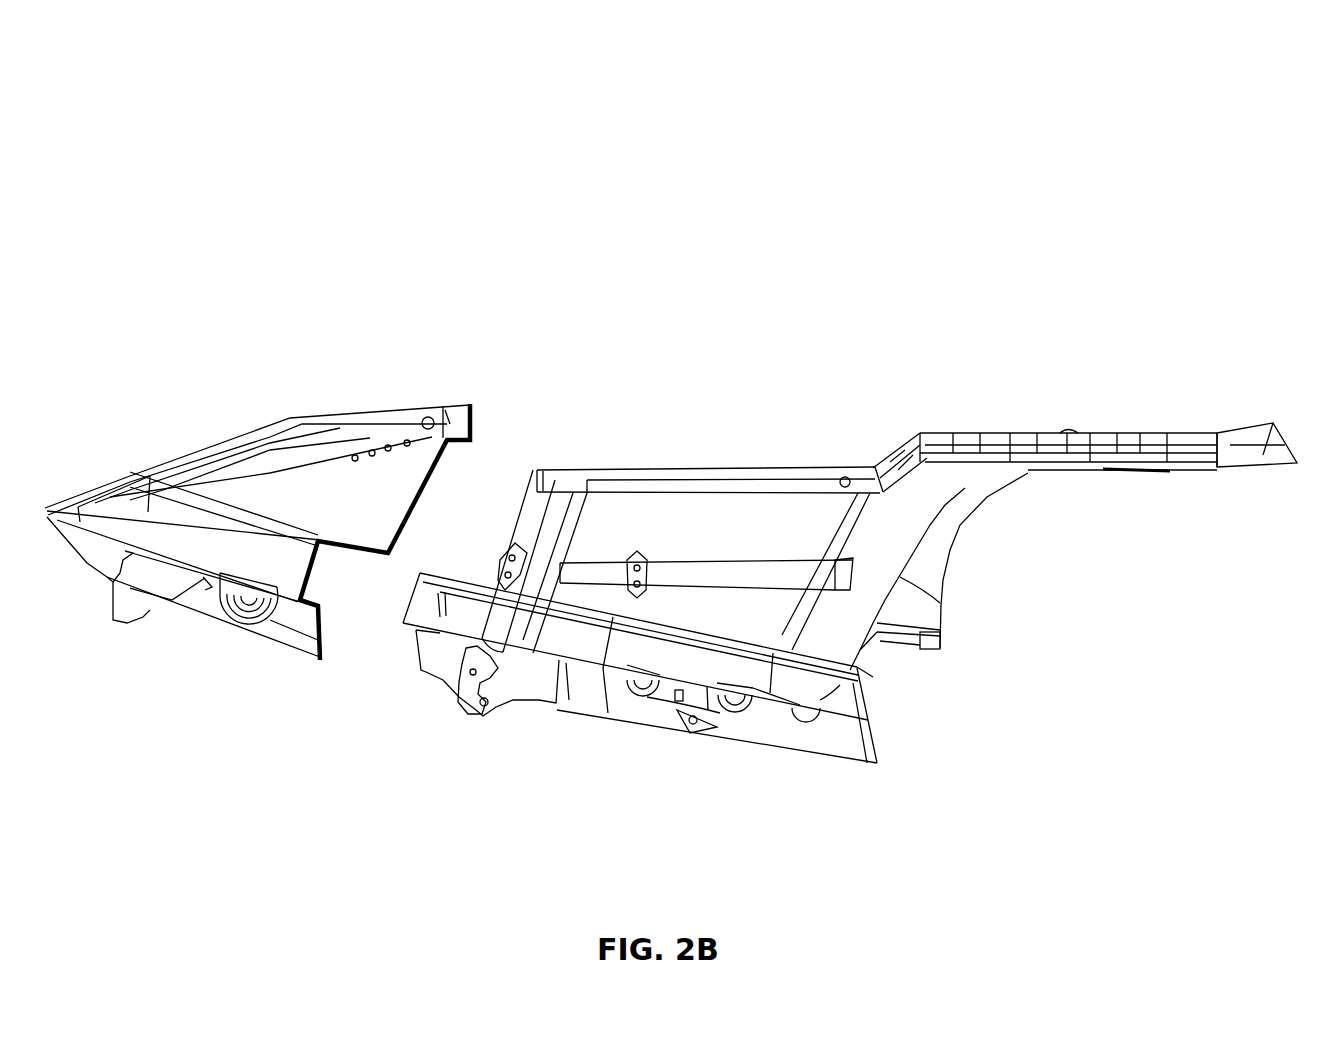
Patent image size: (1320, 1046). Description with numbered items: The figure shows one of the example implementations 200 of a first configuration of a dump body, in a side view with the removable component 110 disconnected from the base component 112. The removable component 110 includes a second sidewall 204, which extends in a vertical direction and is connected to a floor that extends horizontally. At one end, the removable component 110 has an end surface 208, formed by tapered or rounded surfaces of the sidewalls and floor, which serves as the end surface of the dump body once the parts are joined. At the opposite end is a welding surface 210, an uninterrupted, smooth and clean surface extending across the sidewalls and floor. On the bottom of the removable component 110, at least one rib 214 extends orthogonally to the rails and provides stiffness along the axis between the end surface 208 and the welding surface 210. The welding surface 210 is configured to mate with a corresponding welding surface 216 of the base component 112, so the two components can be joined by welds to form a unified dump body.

The example implementations 200 is at (165, 62).
The removable component 110 is at (285, 398).
The second sidewall 204 is at (334, 473).
The end surface 208 is at (48, 545).
The welding surface 210 is at (329, 585).
The rib 214 is at (240, 618).
The base component 112 is at (685, 450).
The welding surface 216 is at (497, 507).